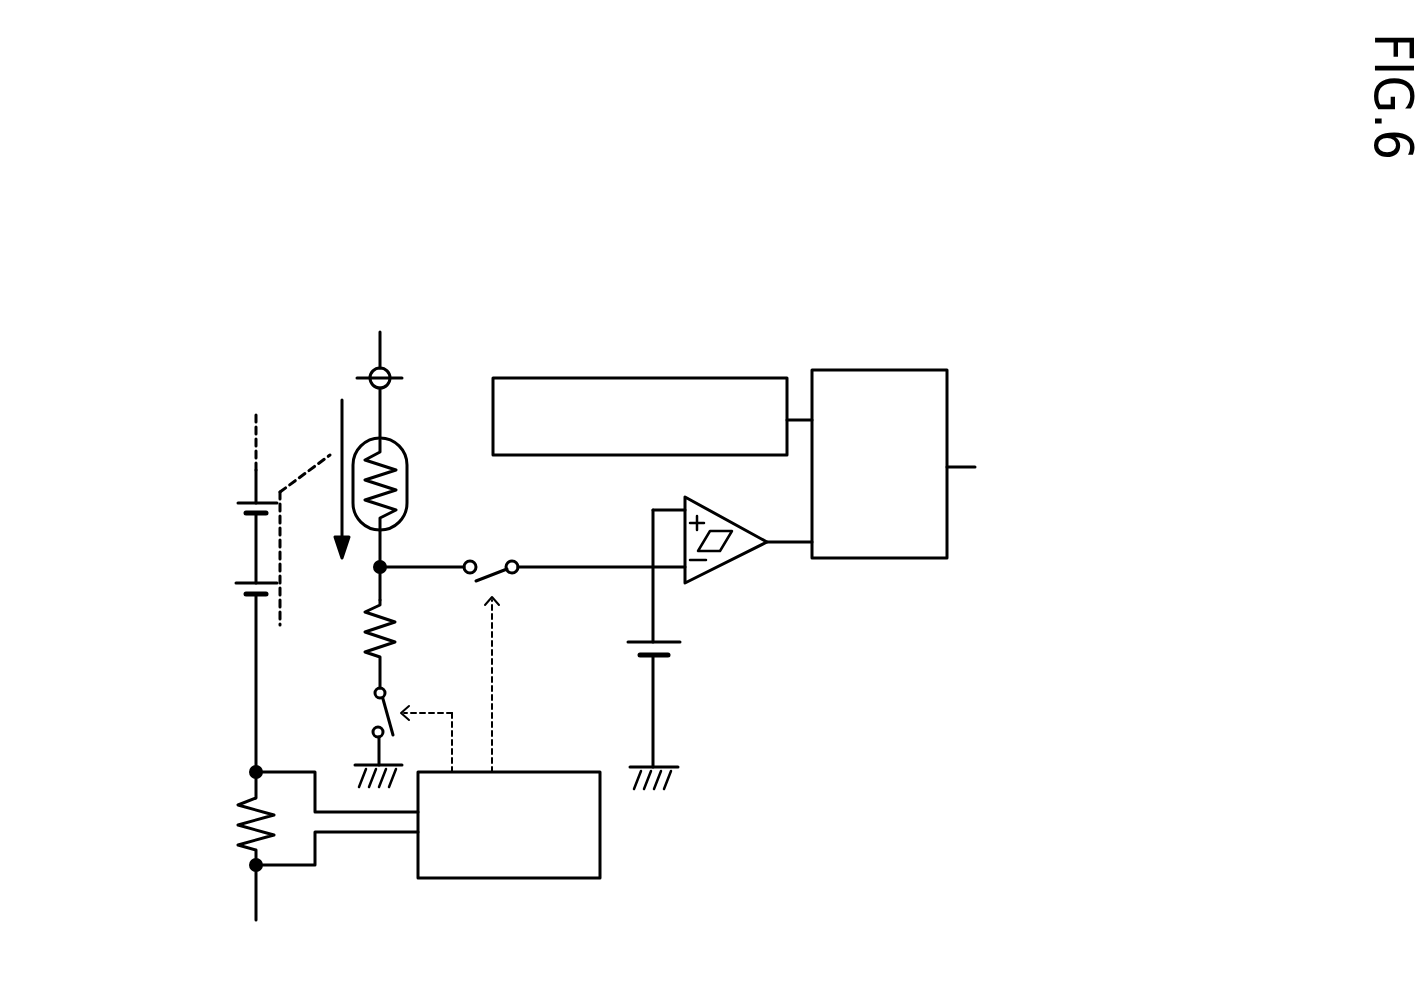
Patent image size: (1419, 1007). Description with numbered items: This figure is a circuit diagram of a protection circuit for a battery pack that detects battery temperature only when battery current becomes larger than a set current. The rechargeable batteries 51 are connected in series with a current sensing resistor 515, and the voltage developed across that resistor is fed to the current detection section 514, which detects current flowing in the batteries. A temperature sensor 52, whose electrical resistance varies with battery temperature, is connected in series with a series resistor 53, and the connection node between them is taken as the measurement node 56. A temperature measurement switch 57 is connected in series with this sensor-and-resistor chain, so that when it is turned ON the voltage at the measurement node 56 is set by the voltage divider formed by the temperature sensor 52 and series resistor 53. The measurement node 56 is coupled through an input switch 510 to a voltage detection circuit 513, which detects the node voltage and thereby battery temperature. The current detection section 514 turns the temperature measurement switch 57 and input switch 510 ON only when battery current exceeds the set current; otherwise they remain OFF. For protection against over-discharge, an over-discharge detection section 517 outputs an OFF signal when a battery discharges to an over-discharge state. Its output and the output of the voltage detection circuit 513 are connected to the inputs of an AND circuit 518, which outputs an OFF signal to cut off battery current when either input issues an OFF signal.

The rechargeable battery 51 is at (240, 503).
The temperature sensor 52 is at (402, 445).
The series resistor 53 is at (372, 652).
The measurement node 56 is at (388, 563).
The temperature measurement switch 57 is at (372, 727).
The input switch 510 is at (497, 575).
The voltage detection circuit 513 is at (732, 558).
The current detection section 514 is at (600, 831).
The current sensing resistor 515 is at (245, 830).
The over-discharge detection section 517 is at (688, 378).
The AND circuit 518 is at (895, 560).